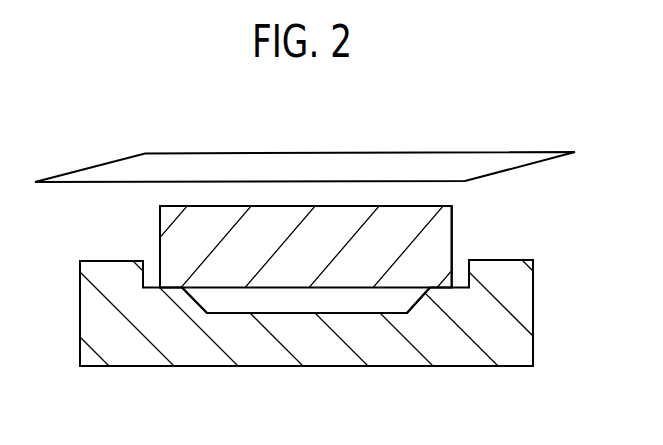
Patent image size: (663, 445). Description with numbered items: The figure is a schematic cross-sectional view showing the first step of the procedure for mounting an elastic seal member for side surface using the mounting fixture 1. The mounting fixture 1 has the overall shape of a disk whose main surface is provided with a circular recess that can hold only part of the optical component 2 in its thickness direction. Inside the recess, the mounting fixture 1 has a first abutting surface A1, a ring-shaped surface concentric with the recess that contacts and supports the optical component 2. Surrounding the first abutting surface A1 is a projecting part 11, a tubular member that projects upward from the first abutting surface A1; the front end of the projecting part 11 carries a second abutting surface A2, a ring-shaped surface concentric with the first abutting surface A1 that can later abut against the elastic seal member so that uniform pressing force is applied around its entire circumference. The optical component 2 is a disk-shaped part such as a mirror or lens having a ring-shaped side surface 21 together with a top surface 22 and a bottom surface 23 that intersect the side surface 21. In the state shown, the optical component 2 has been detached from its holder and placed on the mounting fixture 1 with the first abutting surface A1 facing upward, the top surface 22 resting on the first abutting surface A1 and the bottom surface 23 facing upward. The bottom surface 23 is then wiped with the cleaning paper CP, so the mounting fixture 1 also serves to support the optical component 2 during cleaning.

The mounting fixture 1 is at (565, 329).
The projecting part 11 is at (512, 288).
The optical component 2 is at (136, 231).
The side surface 21 is at (452, 235).
The top surface 22 is at (283, 289).
The bottom surface 23 is at (299, 207).
The cleaning paper CP is at (474, 165).
The first abutting surface A1 is at (168, 288).
The second abutting surface A2 is at (100, 262).